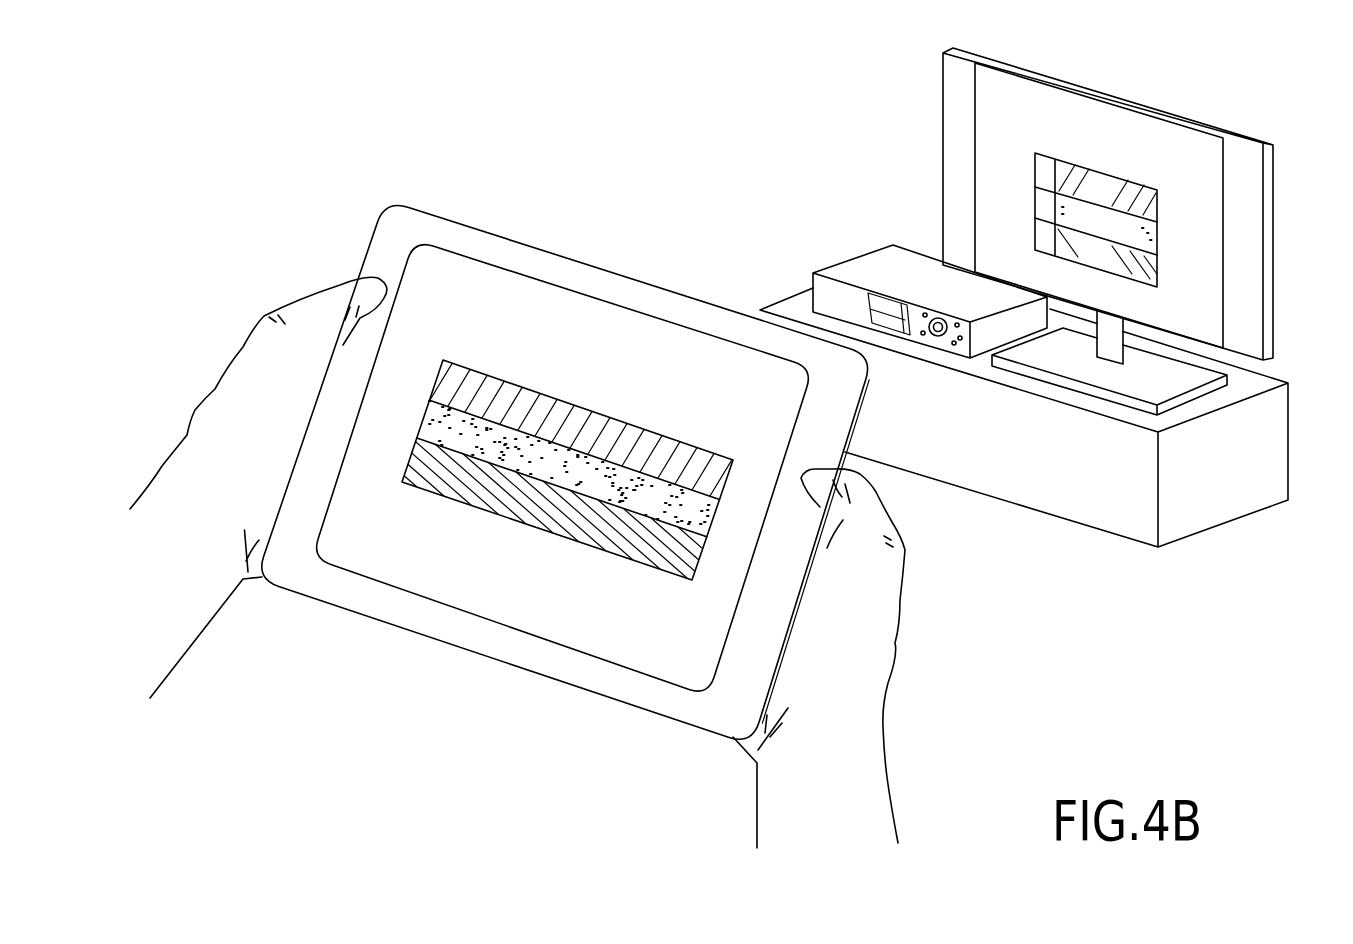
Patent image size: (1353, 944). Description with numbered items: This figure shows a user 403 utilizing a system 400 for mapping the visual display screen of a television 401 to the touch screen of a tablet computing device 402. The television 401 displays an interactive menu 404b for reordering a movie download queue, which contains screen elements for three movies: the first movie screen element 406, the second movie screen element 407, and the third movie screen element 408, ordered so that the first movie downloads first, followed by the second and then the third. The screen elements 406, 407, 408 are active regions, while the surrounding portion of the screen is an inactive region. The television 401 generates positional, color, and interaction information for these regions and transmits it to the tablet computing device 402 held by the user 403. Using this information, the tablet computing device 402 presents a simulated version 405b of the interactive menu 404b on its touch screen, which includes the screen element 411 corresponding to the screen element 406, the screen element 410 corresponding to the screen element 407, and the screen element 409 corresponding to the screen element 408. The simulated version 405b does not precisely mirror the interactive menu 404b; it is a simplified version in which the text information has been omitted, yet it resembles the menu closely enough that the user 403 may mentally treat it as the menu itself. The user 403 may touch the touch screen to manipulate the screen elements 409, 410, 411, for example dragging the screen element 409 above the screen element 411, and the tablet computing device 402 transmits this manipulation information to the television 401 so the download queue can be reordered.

The system 400 is at (1108, 632).
The television 401 is at (1274, 187).
The tablet computing device 402 is at (593, 473).
The user 403 is at (242, 370).
The interactive menu 404b is at (1100, 178).
The simulated version of the interactive menu 405b is at (612, 457).
The screen element for Movie 1 406 is at (1157, 196).
The screen element for Movie 2 407 is at (1157, 228).
The screen element for Movie 3 408 is at (1157, 268).
The screen element 409 is at (700, 557).
The screen element 410 is at (716, 505).
The screen element 411 is at (727, 477).